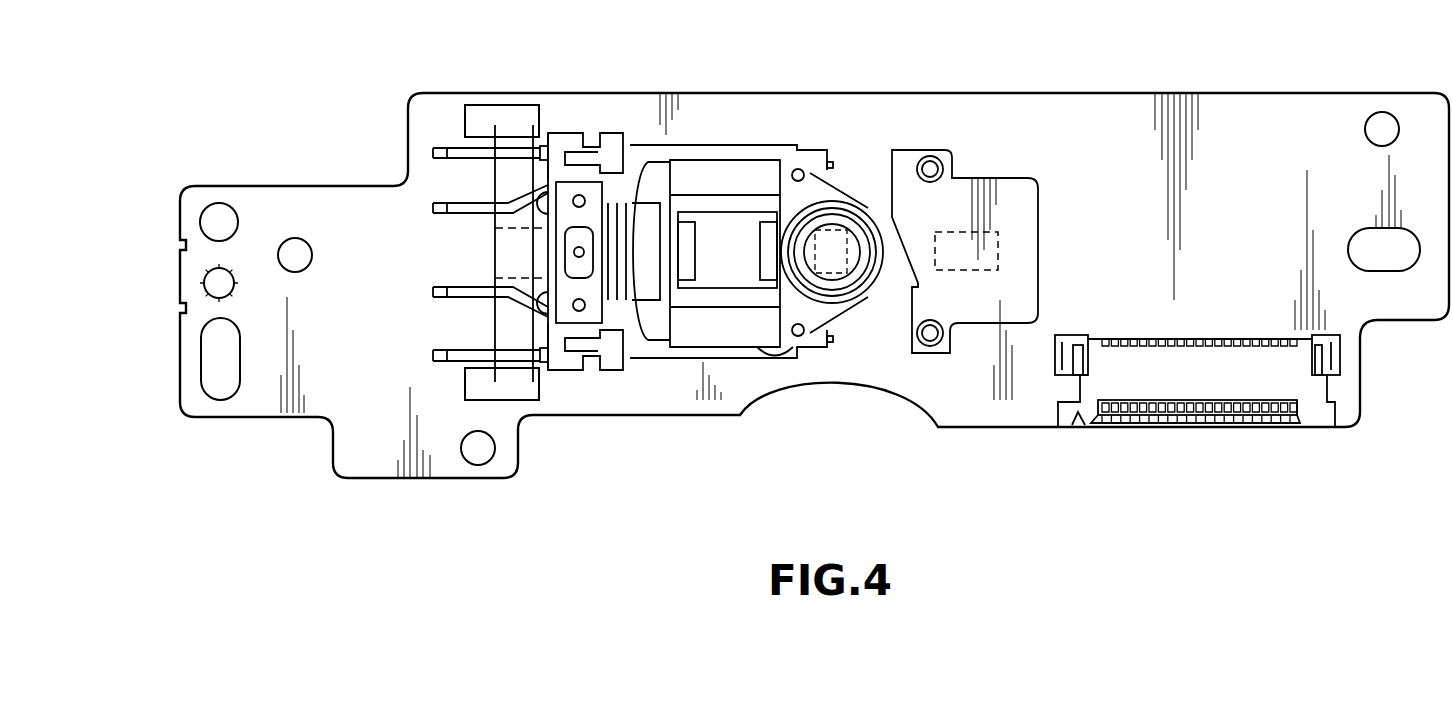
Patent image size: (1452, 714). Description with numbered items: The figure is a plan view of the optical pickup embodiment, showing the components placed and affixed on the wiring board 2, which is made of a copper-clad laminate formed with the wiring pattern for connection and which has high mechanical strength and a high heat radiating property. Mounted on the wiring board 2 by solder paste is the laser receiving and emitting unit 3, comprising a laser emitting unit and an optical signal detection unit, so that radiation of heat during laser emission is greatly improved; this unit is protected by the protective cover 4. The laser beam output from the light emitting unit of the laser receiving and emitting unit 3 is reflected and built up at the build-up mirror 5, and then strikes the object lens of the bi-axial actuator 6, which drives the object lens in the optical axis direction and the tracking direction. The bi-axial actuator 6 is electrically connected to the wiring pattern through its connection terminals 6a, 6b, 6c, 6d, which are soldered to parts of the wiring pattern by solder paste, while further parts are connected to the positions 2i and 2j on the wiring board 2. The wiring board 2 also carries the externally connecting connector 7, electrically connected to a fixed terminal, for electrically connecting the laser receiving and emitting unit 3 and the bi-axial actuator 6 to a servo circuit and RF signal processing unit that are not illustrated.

The wiring board 2 is at (905, 93).
The position 2i is at (483, 105).
The position 2j is at (517, 403).
The laser receiving and emitting unit 3 is at (977, 270).
The protective cover 4 is at (1008, 178).
The build-up mirror 5 is at (832, 275).
The bi-axial actuator 6 is at (840, 187).
The connection terminal 6a is at (433, 152).
The connection terminal 6b is at (433, 207).
The connection terminal 6c is at (433, 289).
The connection terminal 6d is at (433, 353).
The externally connecting connector 7 is at (1315, 413).